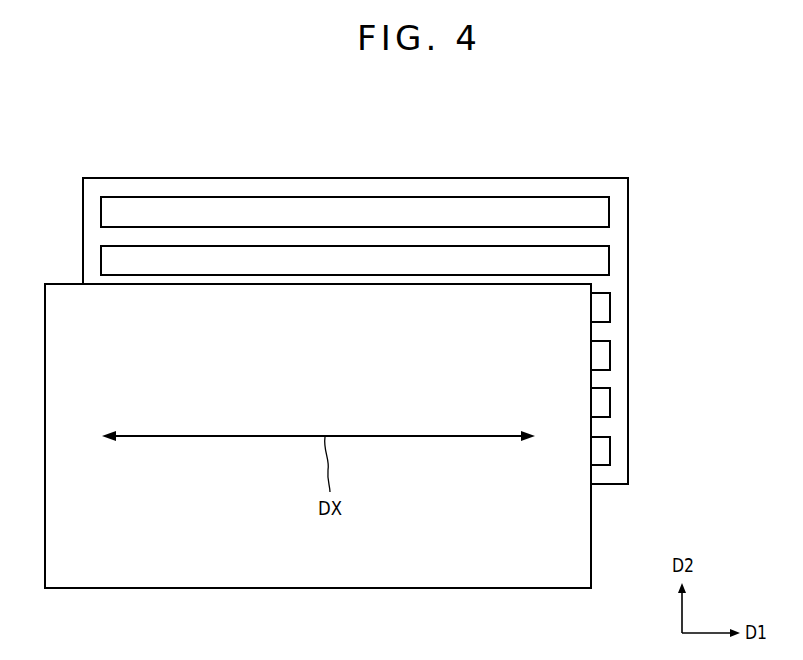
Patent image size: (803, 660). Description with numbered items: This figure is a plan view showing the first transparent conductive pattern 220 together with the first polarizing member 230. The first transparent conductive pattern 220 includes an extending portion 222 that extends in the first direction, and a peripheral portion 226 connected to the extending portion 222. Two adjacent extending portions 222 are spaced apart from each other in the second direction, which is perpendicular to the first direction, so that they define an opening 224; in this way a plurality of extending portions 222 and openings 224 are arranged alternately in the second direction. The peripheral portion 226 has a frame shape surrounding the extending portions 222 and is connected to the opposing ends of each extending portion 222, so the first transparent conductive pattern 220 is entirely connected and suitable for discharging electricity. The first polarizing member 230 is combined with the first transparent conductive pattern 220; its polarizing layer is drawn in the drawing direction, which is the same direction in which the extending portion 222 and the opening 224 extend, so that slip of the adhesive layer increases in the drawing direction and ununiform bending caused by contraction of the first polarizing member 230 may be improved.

The first transparent conductive pattern 220 is at (391, 331).
The extending portion 222 is at (590, 236).
The opening 224 is at (597, 210).
The peripheral portion 226 is at (395, 260).
The first polarizing member 230 is at (583, 523).